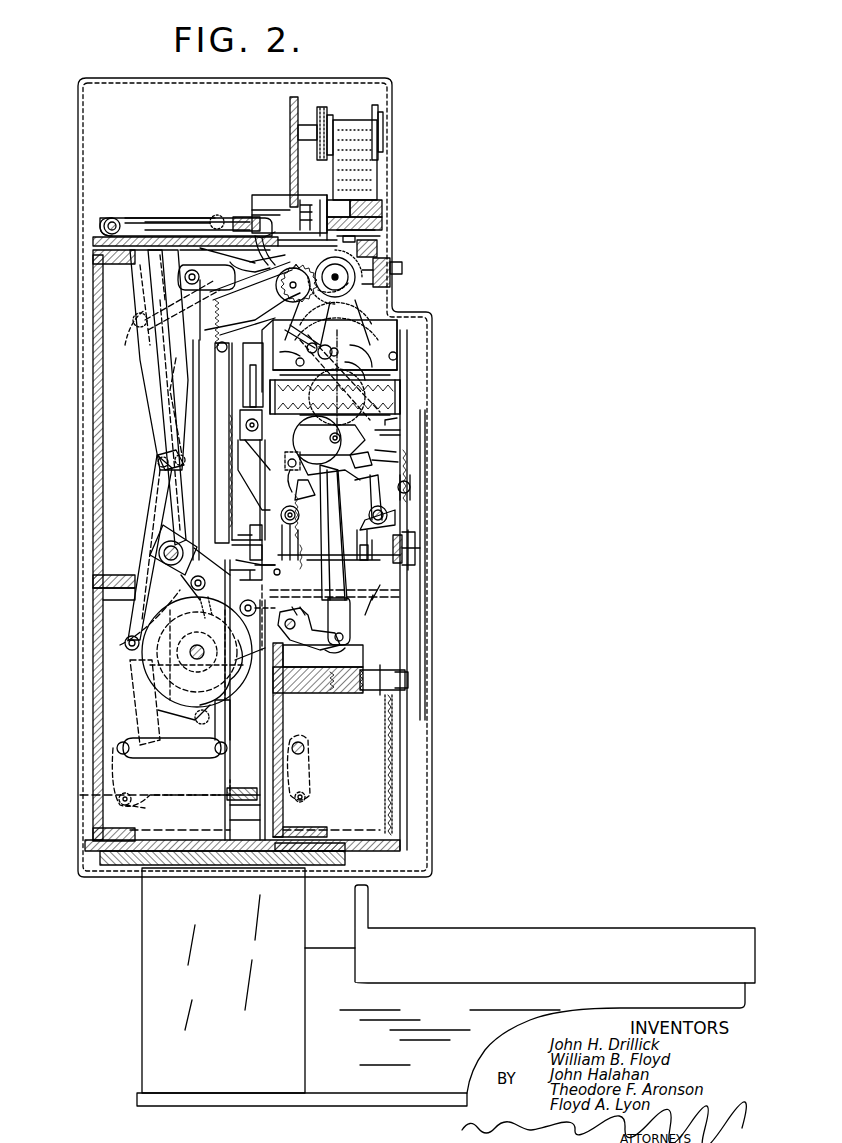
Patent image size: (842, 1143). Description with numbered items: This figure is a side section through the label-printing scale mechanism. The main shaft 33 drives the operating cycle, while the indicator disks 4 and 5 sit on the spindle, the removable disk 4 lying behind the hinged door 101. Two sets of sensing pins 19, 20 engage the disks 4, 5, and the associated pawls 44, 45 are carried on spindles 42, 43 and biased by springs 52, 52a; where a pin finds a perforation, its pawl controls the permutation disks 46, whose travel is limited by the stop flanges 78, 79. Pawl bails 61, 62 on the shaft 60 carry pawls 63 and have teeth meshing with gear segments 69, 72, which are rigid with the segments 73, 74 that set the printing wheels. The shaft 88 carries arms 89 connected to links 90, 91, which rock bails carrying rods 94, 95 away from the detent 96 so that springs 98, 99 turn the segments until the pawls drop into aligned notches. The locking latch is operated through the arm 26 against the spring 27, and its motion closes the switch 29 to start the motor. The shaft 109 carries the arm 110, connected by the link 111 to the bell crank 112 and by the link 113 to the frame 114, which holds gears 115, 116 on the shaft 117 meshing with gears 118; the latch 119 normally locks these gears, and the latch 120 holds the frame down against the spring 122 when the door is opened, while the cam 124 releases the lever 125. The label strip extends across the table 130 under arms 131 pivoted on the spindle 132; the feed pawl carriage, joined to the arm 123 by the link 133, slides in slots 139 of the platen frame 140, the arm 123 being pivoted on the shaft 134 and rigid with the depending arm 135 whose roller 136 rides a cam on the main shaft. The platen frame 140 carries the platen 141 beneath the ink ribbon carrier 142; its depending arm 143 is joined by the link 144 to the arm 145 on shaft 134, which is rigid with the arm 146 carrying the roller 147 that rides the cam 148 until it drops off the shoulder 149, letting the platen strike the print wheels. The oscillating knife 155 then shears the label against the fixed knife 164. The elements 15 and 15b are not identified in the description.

The disk 4 is at (407, 625).
The disk 5 is at (253, 740).
The drive member 15 is at (350, 282).
The shelf 15b is at (489, 910).
The sensing pins 19 is at (410, 553).
The sensing pins 20 is at (262, 574).
The arm 26 is at (250, 471).
The spring 27 is at (240, 495).
The switch 29 is at (239, 442).
The main shaft 33 is at (194, 645).
The spindle 42 is at (388, 513).
The spindle 43 is at (298, 509).
The pawls 44 is at (378, 490).
The pawls 45 is at (305, 498).
The permutation disks 46 is at (378, 436).
The spring 52 is at (339, 553).
The spring 52a is at (410, 490).
The shaft 60 is at (340, 438).
The pawl bail 61 is at (380, 457).
The pawl bail 62 is at (310, 480).
The pawls 63 is at (335, 463).
The gear segment 69 is at (335, 385).
The gear segment 72 is at (375, 375).
The segments 73 is at (365, 316).
The segments 74 is at (285, 322).
The stop flange 78 is at (395, 418).
The stop flange 79 is at (262, 417).
The shaft 88 is at (309, 634).
The arms 89 is at (341, 654).
The link 90 is at (350, 612).
The link 91 is at (350, 515).
The rod 94 is at (312, 348).
The rod 95 is at (370, 337).
The detent 96 is at (318, 333).
The spring 98 is at (385, 350).
The spring 99 is at (289, 362).
The door 101 is at (437, 652).
The shaft 109 is at (306, 748).
The arm 110 is at (305, 778).
The link 111 is at (258, 775).
The bell crank 112 is at (153, 760).
The link 113 is at (222, 518).
The frame 114 is at (205, 310).
The gears 115 is at (320, 250).
The gears 116 is at (270, 205).
The shaft 117 is at (293, 280).
The gears 118 is at (390, 276).
The latch 119 is at (262, 236).
The latch 120 is at (159, 360).
The spring 122 is at (232, 260).
The arm 123 is at (190, 380).
The cam 124 is at (243, 217).
The lever 125 is at (126, 330).
The table 130 is at (136, 232).
The arms 131 is at (168, 232).
The spindle 132 is at (113, 222).
The link 133 is at (217, 215).
The shaft 134 is at (160, 554).
The arm 135 is at (253, 545).
The roller 136 is at (275, 608).
The slots 139 is at (157, 226).
The platen frame 140 is at (180, 238).
The platen 141 is at (383, 225).
The ink ribbon carrier 142 is at (383, 142).
The arm 143 is at (150, 410).
The link 144 is at (166, 455).
The arm 145 is at (155, 485).
The arm 146 is at (118, 642).
The roller 147 is at (125, 645).
The cam 148 is at (190, 705).
The shoulder 149 is at (262, 705).
The oscillating knife 155 is at (370, 248).
The fixed knife 164 is at (380, 233).